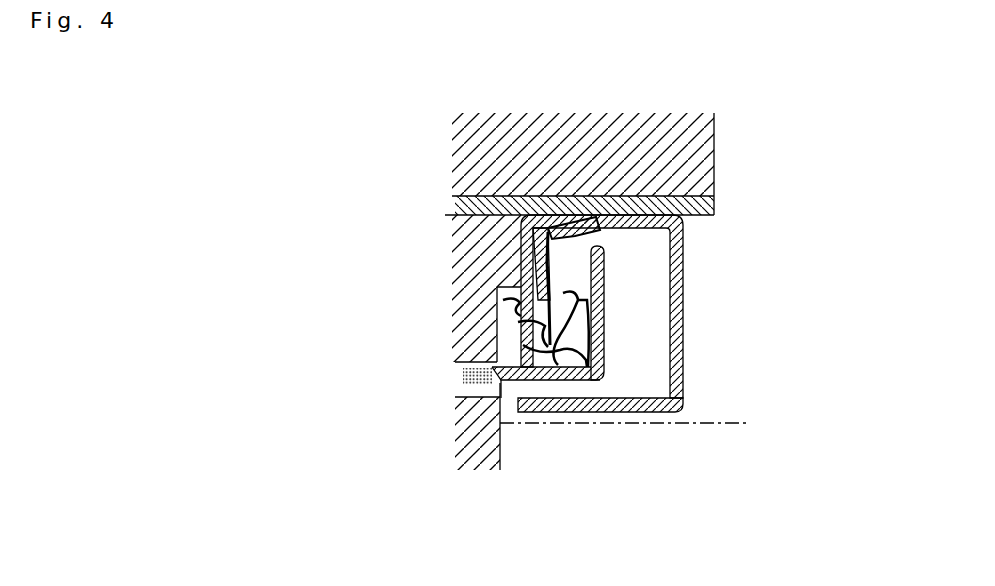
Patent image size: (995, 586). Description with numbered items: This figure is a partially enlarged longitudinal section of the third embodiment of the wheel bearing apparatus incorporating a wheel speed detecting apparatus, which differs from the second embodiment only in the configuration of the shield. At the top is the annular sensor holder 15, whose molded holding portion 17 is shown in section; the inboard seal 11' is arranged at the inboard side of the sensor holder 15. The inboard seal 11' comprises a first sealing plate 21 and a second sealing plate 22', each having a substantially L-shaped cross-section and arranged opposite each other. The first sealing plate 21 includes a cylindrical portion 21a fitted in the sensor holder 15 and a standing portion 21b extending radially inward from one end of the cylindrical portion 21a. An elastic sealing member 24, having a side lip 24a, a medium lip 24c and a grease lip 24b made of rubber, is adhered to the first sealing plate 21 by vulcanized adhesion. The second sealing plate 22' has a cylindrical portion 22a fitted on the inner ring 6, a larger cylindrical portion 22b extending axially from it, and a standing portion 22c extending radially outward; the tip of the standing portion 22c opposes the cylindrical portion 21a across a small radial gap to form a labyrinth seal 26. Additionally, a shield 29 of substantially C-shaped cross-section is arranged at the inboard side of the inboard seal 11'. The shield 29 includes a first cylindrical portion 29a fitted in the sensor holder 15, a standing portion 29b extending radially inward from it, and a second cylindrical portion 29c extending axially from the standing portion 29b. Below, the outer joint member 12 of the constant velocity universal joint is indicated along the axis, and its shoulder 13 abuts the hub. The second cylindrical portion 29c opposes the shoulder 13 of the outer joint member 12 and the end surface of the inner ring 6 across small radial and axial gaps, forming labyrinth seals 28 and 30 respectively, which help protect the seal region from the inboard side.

The sensor holder 15 is at (652, 107).
The labyrinth seal 26 is at (677, 183).
The inboard seal 11' is at (645, 192).
The holding portion 17 is at (495, 260).
The inner ring 6 is at (485, 458).
The labyrinth seal 30 is at (470, 378).
The shield 29 is at (700, 306).
The first cylindrical portion 29a is at (687, 253).
The standing portion 29b is at (687, 302).
The second cylindrical portion 29c is at (737, 367).
The labyrinth seal 28 is at (647, 418).
The second sealing plate 22' is at (584, 405).
The cylindrical portion 22a is at (534, 440).
The larger cylindrical portion 22b is at (567, 380).
The standing portion 22c is at (607, 320).
The first sealing plate 21 is at (534, 176).
The cylindrical portion 21a is at (557, 217).
The standing portion 21b is at (500, 230).
The sealing member 24 is at (400, 334).
The side lip 24a is at (518, 288).
The medium lip 24c is at (522, 320).
The grease lip 24b is at (525, 352).
The outer joint member 12 is at (722, 448).
The shoulder 13 is at (663, 448).